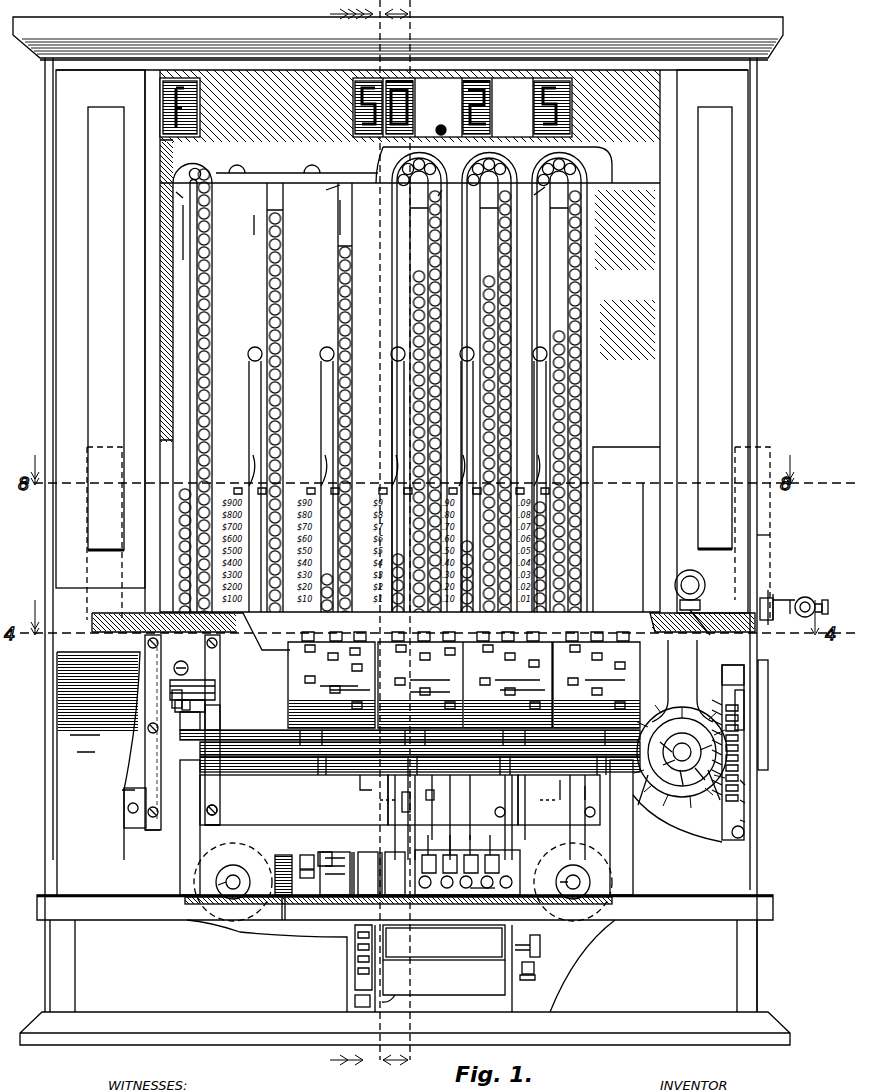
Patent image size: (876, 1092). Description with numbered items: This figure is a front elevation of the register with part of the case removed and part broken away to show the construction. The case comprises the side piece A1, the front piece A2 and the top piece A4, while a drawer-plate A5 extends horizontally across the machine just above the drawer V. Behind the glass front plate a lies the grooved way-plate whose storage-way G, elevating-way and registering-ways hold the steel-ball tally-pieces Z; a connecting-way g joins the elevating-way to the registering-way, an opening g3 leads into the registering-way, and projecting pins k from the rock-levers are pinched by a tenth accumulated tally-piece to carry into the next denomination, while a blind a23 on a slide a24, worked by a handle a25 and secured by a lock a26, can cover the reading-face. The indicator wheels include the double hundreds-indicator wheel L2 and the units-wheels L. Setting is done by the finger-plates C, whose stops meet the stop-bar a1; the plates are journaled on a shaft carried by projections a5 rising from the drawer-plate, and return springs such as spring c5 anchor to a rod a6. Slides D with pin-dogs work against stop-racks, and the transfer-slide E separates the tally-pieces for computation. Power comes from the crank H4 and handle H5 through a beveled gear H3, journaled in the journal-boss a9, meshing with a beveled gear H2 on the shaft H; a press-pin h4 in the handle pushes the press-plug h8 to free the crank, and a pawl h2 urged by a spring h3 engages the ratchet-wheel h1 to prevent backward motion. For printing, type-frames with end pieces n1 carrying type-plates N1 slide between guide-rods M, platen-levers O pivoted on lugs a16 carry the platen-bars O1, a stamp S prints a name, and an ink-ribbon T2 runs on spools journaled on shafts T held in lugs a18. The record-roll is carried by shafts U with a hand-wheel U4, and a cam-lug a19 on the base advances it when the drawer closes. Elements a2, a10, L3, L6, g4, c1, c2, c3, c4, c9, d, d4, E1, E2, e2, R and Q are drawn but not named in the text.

The top piece A4 is at (743, 22).
The front piece A2 is at (413, 345).
The side piece A1 is at (48, 652).
The drawer-plate A5 is at (405, 970).
The front plate a is at (410, 256).
The stop-bar a1 is at (412, 631).
The casing wall a2 is at (408, 825).
The projections a5 is at (406, 827).
The rod a6 is at (270, 770).
The journal-boss a9 is at (750, 720).
The stud a10 is at (746, 834).
The lugs a16 is at (284, 856).
The lugs a18 is at (403, 888).
The cam-lug a19 is at (372, 1004).
The blind a23 is at (626, 529).
The slide a24 is at (705, 620).
The handle a25 is at (705, 582).
The lock a26 is at (722, 676).
The units-wheels L is at (540, 82).
The hundreds-indicator wheel L2 is at (396, 82).
The hundreds indicator L3 is at (167, 83).
The cents indicator L6 is at (470, 82).
The tally-pieces Z is at (212, 250).
The storage-way G is at (352, 150).
The connecting-way g is at (386, 181).
The opening g3 is at (248, 355).
The stop block g4 is at (389, 486).
The projecting pins k is at (396, 466).
The finger-plates C is at (292, 680).
The key lever c1 is at (497, 791).
The key bar c2 is at (212, 715).
The key rod c3 is at (330, 775).
The key rod c4 is at (407, 796).
The spring c5 is at (590, 797).
The key link c9 is at (195, 690).
The slides D is at (192, 672).
The shaft d is at (185, 689).
The screw d4 is at (190, 681).
The transfer-slide E is at (400, 800).
The frame upright E1 is at (173, 818).
The frame foot E2 is at (153, 830).
The lug e2 is at (349, 767).
The shaft H is at (682, 755).
The beveled gear H2 is at (655, 800).
The beveled gear H3 is at (725, 800).
The crank H4 is at (770, 700).
The handle H5 is at (806, 618).
The ratchet-wheel h1 is at (750, 786).
The pawl h2 is at (750, 820).
The spring h3 is at (750, 802).
The press-pin h4 is at (823, 598).
The press-plug h8 is at (765, 598).
The shafts T is at (585, 870).
The ink-ribbon T2 is at (305, 920).
The platen-levers O is at (285, 930).
The platen-bars O1 is at (408, 868).
The stamp S is at (322, 856).
The printing wheel R is at (335, 866).
The type wheel Q is at (380, 858).
The type-plates N1 is at (348, 931).
The end pieces n1 is at (461, 865).
The guide-rods M is at (483, 892).
The shafts U is at (505, 990).
The hand-wheel U4 is at (541, 946).
The drawer V is at (535, 972).